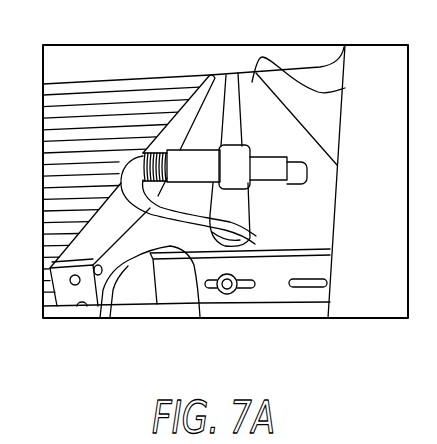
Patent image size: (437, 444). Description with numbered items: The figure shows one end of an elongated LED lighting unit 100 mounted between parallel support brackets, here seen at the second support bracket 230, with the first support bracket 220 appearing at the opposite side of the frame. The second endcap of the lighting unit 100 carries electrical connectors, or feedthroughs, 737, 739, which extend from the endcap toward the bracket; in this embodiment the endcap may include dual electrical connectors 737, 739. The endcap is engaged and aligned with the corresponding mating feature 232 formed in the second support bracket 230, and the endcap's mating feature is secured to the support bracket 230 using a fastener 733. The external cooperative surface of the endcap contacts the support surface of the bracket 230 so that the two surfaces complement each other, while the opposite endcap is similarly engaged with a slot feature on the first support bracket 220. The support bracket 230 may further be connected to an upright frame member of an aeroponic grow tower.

The elongated LED lighting unit 100 is at (231, 127).
The first support bracket 220 is at (345, 88).
The second support bracket 230 is at (293, 267).
The mating feature 232 is at (317, 283).
The fastener 733 is at (227, 294).
The electrical connector 737 is at (122, 319).
The electrical connector 739 is at (200, 317).